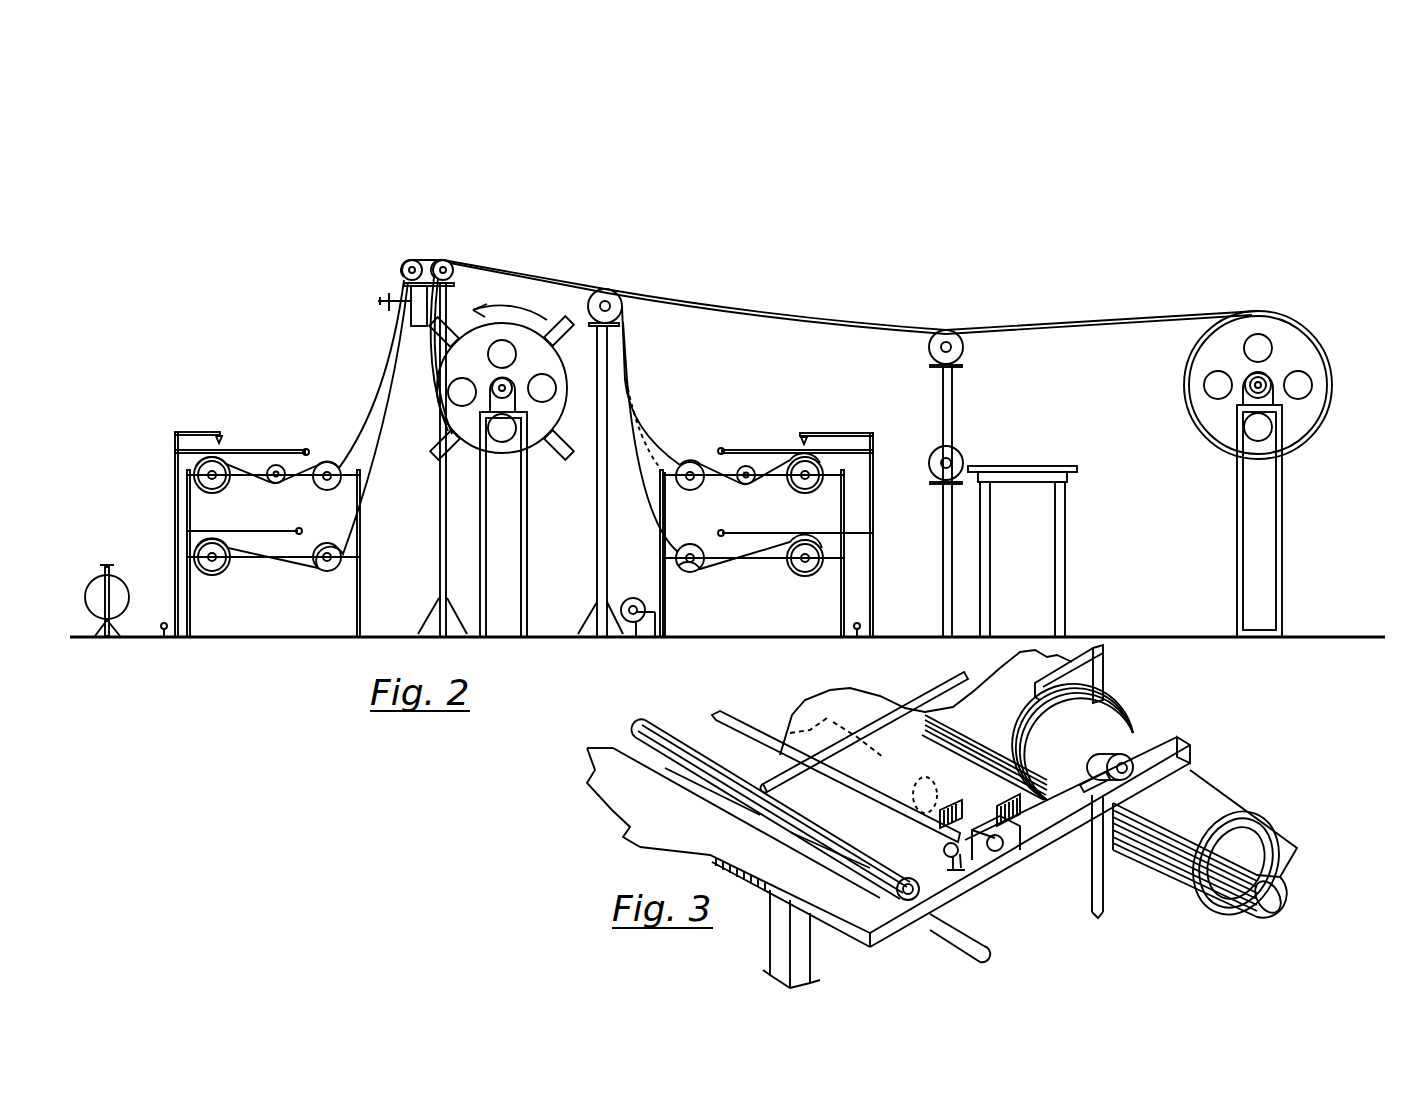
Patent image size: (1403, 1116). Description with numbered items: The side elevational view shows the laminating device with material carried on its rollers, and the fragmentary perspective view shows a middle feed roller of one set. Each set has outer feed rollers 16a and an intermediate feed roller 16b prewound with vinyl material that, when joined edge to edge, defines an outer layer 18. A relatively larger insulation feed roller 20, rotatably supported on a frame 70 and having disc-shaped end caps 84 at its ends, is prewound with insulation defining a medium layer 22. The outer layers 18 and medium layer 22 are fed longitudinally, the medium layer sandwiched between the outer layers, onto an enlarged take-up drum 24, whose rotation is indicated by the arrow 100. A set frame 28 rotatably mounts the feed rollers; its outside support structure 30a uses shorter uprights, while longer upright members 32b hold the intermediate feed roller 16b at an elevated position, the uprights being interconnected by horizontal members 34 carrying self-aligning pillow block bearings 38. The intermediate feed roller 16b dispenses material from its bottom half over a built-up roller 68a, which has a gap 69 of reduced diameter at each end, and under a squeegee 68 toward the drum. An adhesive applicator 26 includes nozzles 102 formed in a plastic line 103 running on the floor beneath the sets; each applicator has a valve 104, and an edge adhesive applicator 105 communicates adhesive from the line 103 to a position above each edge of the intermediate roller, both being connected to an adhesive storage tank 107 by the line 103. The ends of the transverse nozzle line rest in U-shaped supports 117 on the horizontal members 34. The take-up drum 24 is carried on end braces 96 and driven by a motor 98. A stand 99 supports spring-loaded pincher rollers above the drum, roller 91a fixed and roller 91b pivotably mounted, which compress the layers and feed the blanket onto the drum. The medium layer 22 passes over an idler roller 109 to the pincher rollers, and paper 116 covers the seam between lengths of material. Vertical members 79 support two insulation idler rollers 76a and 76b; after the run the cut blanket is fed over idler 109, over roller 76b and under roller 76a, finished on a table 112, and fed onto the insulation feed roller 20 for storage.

In FIG. 2, the outer feed roller 16a is at (223, 573).
In FIG. 3, the outer feed roller 16a is at (1277, 850).
In FIG. 2, the intermediate feed roller 16b is at (200, 480).
In FIG. 3, the intermediate feed roller 16b is at (1113, 720).
In FIG. 2, the outer layer 18 is at (383, 386).
In FIG. 3, the outer layer 18 is at (1200, 792).
In FIG. 2, the insulation feed roller 20 is at (657, 553).
In FIG. 2, the medium layer 22 is at (1082, 322).
In FIG. 2, the take-up drum 24 is at (520, 368).
In FIG. 2, the adhesive applicator 26 is at (305, 449).
In FIG. 3, the adhesive applicator 26 is at (721, 718).
In FIG. 2, the set frame 28 is at (370, 500).
In FIG. 2, the outside support structure 30a is at (267, 534).
In FIG. 3, the upright members 32b is at (812, 952).
In FIG. 3, the horizontal members 34 is at (1050, 845).
In FIG. 3, the self-aligning pillow block bearings 38 is at (1178, 742).
In FIG. 2, the squeegee 68 is at (333, 483).
In FIG. 3, the squeegee 68 is at (763, 797).
In FIG. 2, the built-up roller 68a is at (287, 473).
In FIG. 3, the built-up roller 68a is at (903, 764).
In FIG. 3, the gap 69 is at (965, 820).
In FIG. 2, the frame 70 is at (1283, 537).
In FIG. 2, the insulation idler roller 76a is at (952, 460).
In FIG. 2, the insulation idler roller 76b is at (948, 332).
In FIG. 2, the vertical members 79 is at (953, 390).
In FIG. 2, the end caps 84 is at (1300, 424).
In FIG. 2, the pincher roller 91a is at (447, 262).
In FIG. 2, the pincher roller 91b is at (404, 265).
In FIG. 2, the end braces 96 is at (528, 540).
In FIG. 2, the motor 98 is at (508, 394).
In FIG. 2, the stand 99 is at (433, 522).
In FIG. 2, the direction of rotation 100 is at (560, 323).
In FIG. 3, the nozzles 102 is at (880, 720).
In FIG. 2, the plastic line 103 is at (873, 560).
In FIG. 2, the valve 104 is at (163, 622).
In FIG. 2, the edge adhesive applicator 105 is at (218, 431).
In FIG. 3, the edge adhesive applicator 105 is at (1105, 663).
In FIG. 2, the adhesive storage tank 107 is at (107, 588).
In FIG. 2, the idler roller 109 is at (608, 296).
In FIG. 2, the table 112 is at (1046, 466).
In FIG. 2, the paper 116 is at (620, 508).
In FIG. 3, the U-shaped supports 117 is at (964, 870).